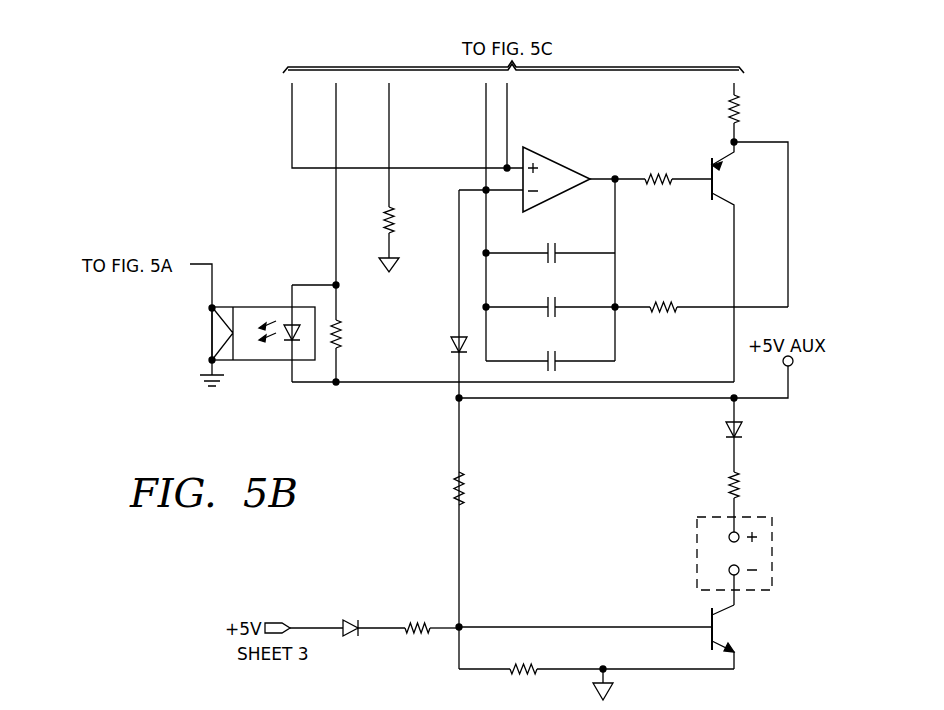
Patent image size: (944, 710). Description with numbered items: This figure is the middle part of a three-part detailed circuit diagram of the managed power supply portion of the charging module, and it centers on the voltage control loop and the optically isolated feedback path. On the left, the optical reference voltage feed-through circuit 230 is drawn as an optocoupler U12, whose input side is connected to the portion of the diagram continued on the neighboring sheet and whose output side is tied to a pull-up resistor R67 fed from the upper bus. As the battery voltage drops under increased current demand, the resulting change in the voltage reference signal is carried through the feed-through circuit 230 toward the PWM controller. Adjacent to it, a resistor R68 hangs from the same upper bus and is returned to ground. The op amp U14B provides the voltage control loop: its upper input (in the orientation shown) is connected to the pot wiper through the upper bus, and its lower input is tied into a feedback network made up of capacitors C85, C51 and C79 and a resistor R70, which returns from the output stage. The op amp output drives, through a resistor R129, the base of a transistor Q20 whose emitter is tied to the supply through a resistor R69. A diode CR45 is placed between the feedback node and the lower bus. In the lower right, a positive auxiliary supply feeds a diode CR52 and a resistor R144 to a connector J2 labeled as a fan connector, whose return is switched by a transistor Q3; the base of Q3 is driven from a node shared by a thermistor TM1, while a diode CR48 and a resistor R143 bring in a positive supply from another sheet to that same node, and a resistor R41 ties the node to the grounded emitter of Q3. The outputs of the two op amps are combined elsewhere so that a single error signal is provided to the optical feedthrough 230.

The optical reference voltage feed-through circuit 230 is at (235, 308).
The optocoupler CMK02A U12 is at (235, 335).
The resistor 200 ohm R67 is at (355, 234).
The resistor 100K R68 is at (411, 177).
The op amp U14B is at (552, 171).
The resistor 51K R129 is at (673, 155).
The transistor Q20 is at (741, 262).
The resistor 330 ohm R69 is at (758, 195).
The resistor 51K R70 is at (700, 284).
The capacitor .01UF C85 is at (549, 242).
The capacitor .1UF C51 is at (549, 295).
The capacitor .1UF C79 is at (550, 350).
The diode CR45 is at (432, 429).
The diode 1N4002 CR52 is at (696, 435).
The resistor 4.7 ohm R144 is at (759, 498).
The fan connector J2 is at (756, 561).
The transistor MPS2222 Q3 is at (636, 636).
The resistor 680 ohm R41 is at (596, 671).
The thermistor 10K TM1 is at (448, 486).
The diode CR48 is at (366, 616).
The resistor 1K R143 is at (425, 603).